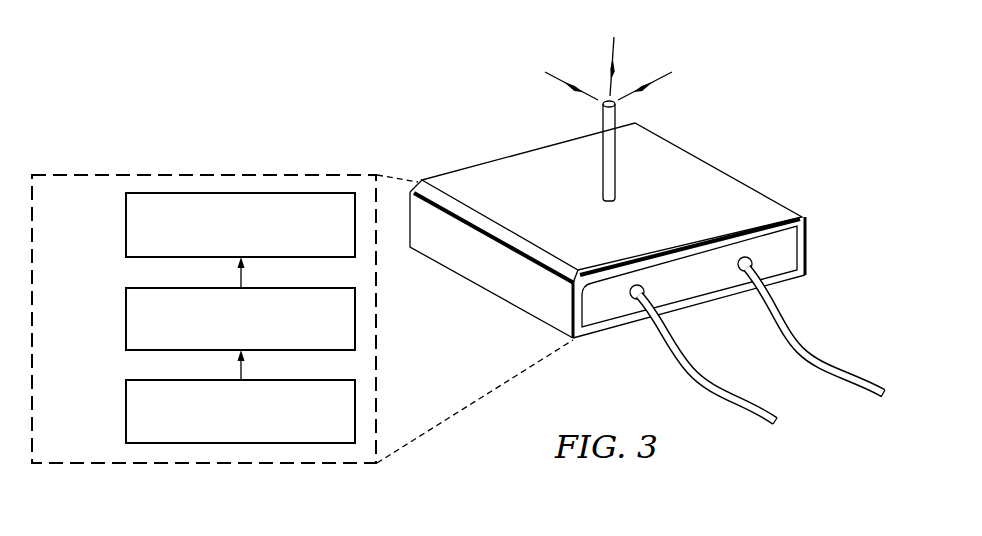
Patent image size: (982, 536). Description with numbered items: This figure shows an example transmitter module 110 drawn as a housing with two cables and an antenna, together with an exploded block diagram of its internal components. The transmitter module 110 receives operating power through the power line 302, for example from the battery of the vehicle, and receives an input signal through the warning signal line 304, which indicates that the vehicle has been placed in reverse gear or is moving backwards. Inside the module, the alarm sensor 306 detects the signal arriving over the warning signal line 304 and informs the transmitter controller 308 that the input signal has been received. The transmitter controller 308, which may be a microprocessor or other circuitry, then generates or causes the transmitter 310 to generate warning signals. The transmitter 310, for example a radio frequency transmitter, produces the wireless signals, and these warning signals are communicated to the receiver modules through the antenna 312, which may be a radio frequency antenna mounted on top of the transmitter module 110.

The transmitter module 110 is at (478, 158).
The power line 302 is at (697, 372).
The warning signal line 304 is at (803, 348).
The alarm sensor 306 is at (126, 412).
The transmitter controller 308 is at (126, 317).
The transmitter 310 is at (126, 223).
The antenna 312 is at (603, 125).